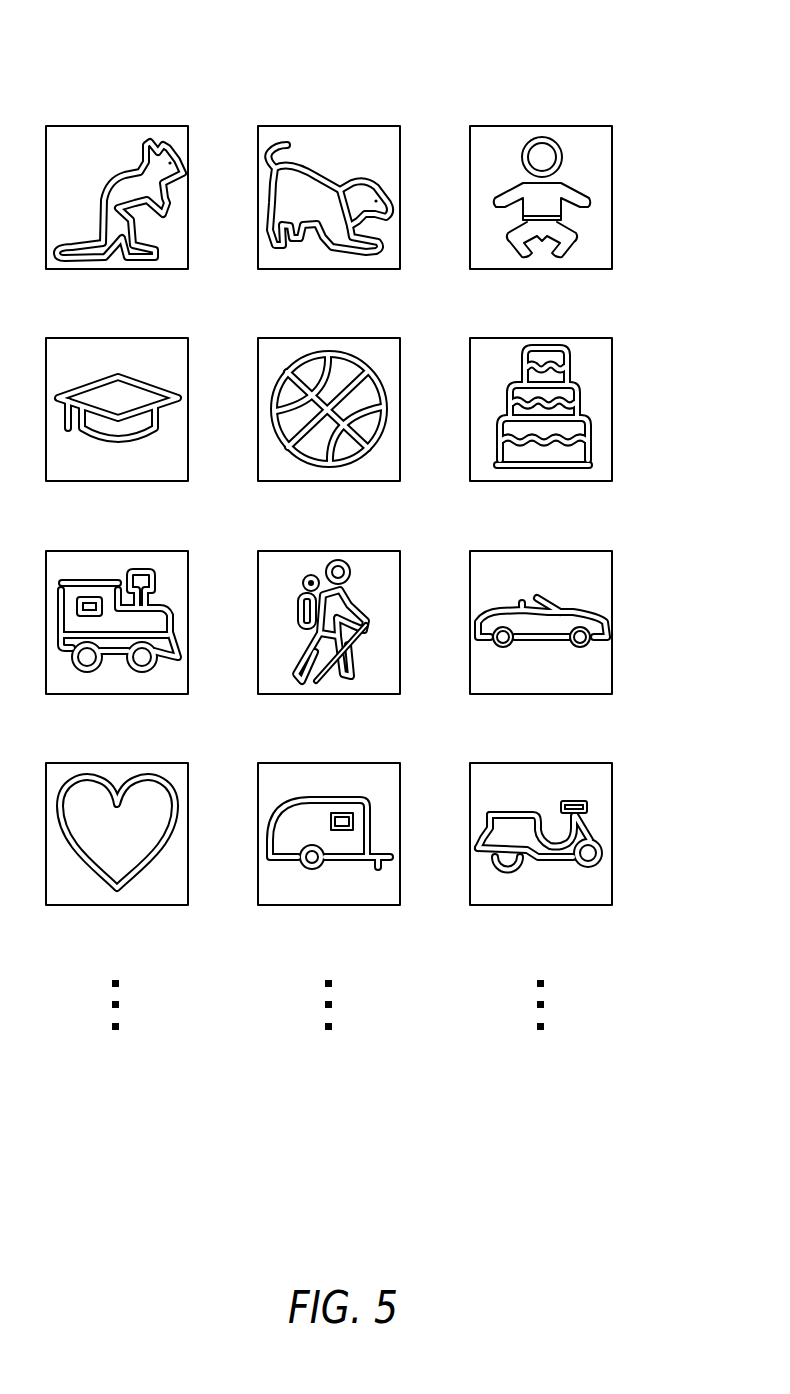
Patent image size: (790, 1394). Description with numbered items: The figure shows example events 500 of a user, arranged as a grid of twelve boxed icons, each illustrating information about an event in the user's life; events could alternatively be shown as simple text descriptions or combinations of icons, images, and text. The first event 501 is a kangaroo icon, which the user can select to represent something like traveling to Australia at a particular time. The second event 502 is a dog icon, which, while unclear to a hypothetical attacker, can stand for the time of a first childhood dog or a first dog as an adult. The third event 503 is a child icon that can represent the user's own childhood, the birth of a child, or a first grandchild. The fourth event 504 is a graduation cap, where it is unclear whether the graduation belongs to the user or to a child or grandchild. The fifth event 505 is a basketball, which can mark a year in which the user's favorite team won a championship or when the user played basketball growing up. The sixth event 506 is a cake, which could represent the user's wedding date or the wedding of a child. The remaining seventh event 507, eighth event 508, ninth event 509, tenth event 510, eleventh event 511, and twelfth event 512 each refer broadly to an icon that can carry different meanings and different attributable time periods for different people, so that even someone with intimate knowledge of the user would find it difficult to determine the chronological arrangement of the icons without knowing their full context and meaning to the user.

The example events 500 is at (612, 56).
The first event 501 is at (190, 141).
The second event 502 is at (402, 141).
The third event 503 is at (614, 141).
The fourth event 504 is at (190, 353).
The fifth event 505 is at (402, 353).
The sixth event 506 is at (614, 353).
The seventh event 507 is at (190, 566).
The eighth event 508 is at (402, 566).
The ninth event 509 is at (614, 566).
The tenth event 510 is at (190, 778).
The eleventh event 511 is at (402, 778).
The twelfth event 512 is at (614, 778).